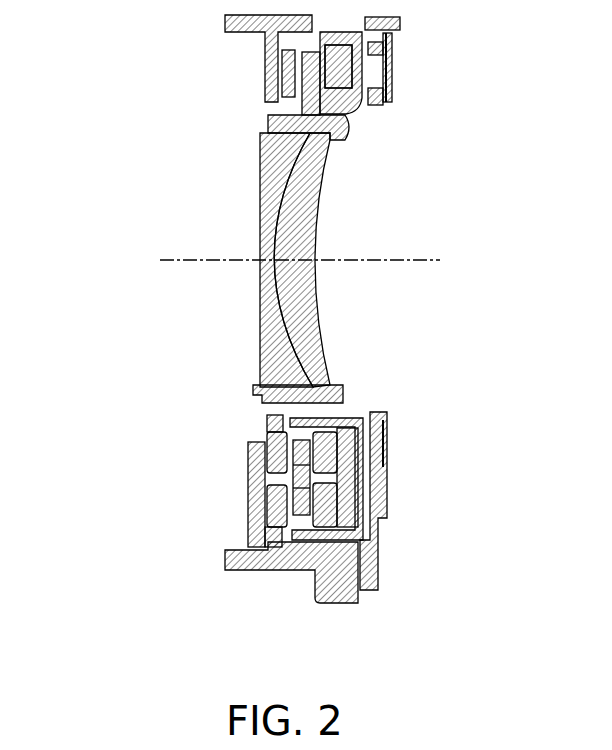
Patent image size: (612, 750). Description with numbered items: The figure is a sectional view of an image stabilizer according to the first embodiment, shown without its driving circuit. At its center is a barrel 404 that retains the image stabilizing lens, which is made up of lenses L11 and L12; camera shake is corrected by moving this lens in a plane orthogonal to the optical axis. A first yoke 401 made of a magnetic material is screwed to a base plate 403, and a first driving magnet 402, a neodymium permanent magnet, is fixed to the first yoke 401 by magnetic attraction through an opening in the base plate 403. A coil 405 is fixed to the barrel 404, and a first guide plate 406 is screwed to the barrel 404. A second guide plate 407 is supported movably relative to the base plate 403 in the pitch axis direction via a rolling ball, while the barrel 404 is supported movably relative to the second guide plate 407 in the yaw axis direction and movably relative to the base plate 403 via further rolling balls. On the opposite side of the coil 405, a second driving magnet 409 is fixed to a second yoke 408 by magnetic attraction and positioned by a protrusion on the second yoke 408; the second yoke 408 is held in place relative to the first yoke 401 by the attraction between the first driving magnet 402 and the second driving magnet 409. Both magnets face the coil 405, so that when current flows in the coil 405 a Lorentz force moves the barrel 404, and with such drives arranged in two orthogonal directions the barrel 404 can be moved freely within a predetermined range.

The lens L11 is at (272, 182).
The lens L12 is at (313, 160).
The first yoke 401 is at (252, 452).
The first driving magnet 402 is at (270, 452).
The base plate 403 is at (232, 562).
The barrel 404 is at (327, 125).
The coil 405 is at (303, 507).
The first guide plate 406 is at (315, 67).
The second guide plate 407 is at (290, 78).
The second yoke 408 is at (343, 507).
The second driving magnet 409 is at (327, 500).